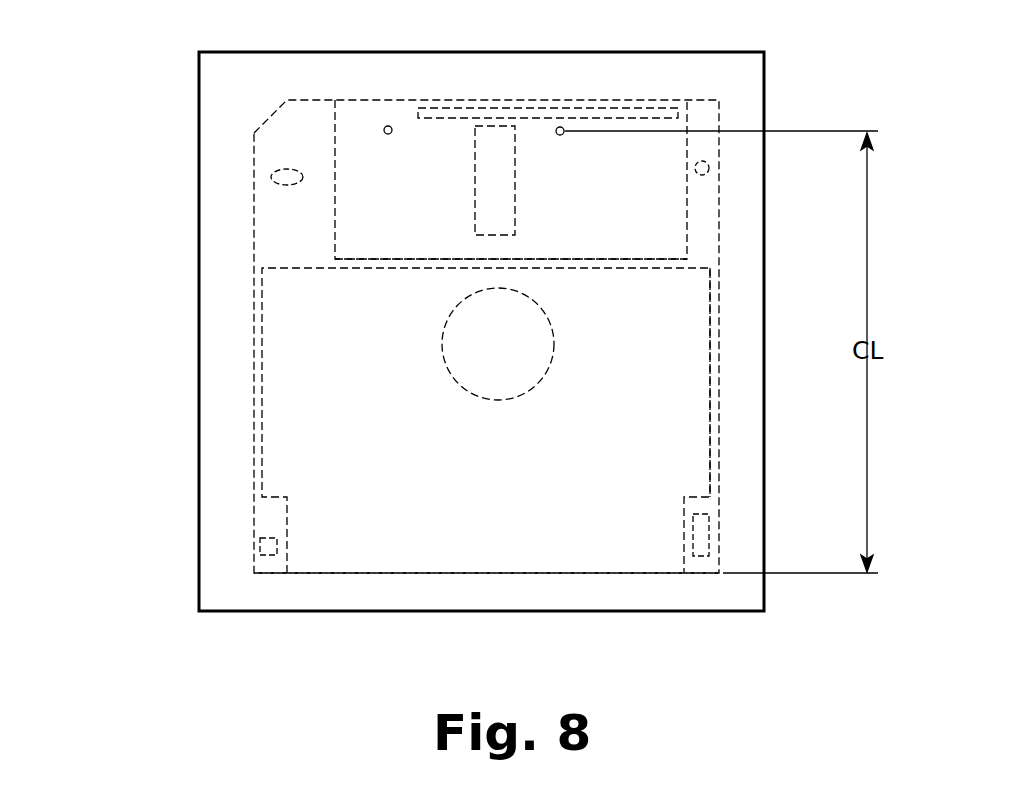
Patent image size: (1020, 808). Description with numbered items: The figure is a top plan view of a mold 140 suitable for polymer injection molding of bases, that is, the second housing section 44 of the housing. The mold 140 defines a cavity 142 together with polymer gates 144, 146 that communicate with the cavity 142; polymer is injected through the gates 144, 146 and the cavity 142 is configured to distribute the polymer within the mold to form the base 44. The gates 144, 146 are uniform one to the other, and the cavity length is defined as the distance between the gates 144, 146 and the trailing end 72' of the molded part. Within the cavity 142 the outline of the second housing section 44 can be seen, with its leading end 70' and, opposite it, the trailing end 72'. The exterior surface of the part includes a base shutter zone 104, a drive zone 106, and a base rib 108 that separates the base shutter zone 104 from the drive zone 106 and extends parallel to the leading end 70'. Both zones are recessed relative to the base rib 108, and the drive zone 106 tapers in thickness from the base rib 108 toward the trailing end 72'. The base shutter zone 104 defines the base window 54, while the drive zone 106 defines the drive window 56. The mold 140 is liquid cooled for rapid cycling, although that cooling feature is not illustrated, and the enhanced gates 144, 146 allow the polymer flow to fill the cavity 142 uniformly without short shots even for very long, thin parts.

The mold 140 is at (187, 100).
The cavity 142 is at (254, 300).
The polymer gate 144 is at (390, 124).
The leading end 70' is at (548, 59).
The polymer gate 146 is at (562, 127).
The base window 54 is at (516, 170).
The base shutter zone 104 is at (413, 199).
The base rib 108 is at (616, 264).
The drive zone 106 is at (345, 401).
The drive window 56 is at (554, 336).
The second housing section 44 is at (711, 296).
The trailing end 72' is at (486, 623).